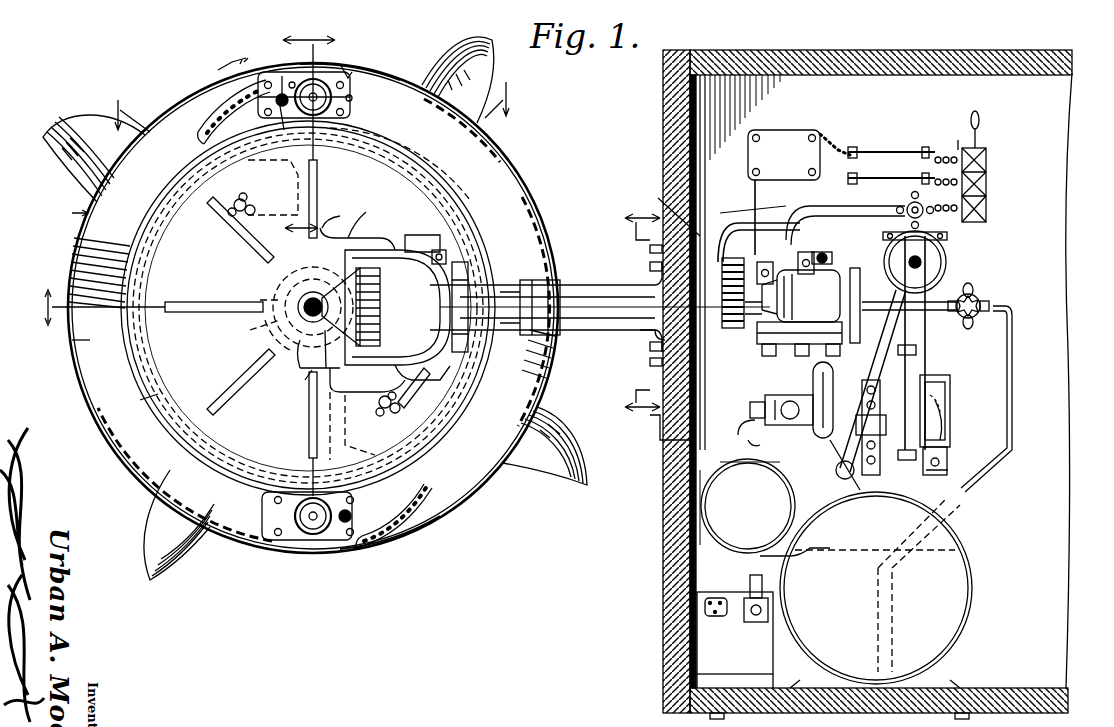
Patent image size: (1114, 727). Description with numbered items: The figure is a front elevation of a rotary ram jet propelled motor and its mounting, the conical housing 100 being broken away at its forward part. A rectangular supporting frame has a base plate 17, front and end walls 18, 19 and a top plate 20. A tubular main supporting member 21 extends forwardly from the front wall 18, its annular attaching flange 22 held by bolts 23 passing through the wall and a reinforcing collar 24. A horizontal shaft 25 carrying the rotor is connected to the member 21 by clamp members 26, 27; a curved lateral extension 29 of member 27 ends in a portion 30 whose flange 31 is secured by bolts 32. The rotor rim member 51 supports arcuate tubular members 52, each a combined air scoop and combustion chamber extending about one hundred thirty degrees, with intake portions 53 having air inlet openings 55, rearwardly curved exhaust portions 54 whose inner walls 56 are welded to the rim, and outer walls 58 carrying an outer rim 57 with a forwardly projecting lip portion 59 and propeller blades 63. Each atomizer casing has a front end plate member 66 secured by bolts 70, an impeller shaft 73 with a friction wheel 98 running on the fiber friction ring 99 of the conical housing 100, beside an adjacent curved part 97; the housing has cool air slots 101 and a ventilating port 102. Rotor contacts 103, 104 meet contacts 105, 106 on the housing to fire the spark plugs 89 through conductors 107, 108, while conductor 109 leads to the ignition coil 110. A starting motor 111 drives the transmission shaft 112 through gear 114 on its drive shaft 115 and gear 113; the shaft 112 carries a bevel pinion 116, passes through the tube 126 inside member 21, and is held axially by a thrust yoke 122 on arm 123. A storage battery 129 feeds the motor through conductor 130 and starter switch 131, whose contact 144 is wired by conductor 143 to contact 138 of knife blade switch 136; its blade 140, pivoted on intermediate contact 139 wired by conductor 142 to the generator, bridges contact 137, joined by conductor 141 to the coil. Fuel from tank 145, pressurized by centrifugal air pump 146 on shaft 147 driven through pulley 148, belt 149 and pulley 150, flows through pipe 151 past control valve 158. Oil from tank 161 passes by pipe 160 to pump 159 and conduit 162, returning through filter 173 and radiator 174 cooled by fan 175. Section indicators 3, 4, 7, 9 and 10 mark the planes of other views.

The section line 3 is at (383, 258).
The section line 4 is at (310, 107).
The section line 7 is at (309, 134).
The section line 9 is at (642, 319).
The upper bearing bracket 10 is at (342, 66).
The base plate 17 is at (1060, 700).
The front wall 18 is at (663, 522).
The end wall 19 is at (1068, 120).
The top plate 20 is at (1072, 60).
The main supporting member 21 is at (640, 333).
The annular attaching flange 22 is at (650, 250).
The bolts 23 is at (650, 267).
The reinforcing collar 24 is at (650, 362).
The horizontal shaft 25 is at (288, 292).
The clamp member 26 is at (280, 278).
The clamp member 27 is at (296, 345).
The curved lateral extension 29 is at (366, 250).
The portion 30 is at (410, 244).
The flange 31 is at (439, 250).
The bolts 32 is at (470, 275).
The rim member 51 is at (425, 384).
The tubular members 52 is at (185, 118).
The intake portions 53 is at (462, 140).
The exhaust portions 54 is at (78, 255).
The air inlet opening 55 is at (450, 160).
The inner walls 56 is at (313, 308).
The outer rim 57 is at (68, 213).
The outer walls 58 is at (288, 308).
The lip portion 59 is at (82, 343).
The propeller blades 63 is at (38, 165).
The front end plate member 66 is at (372, 76).
The bolts 70 is at (300, 540).
The impeller shaft 73 is at (318, 140).
The spark plugs 89 is at (280, 70).
The curved plates 97 is at (206, 96).
The friction wheel 98 is at (340, 118).
The friction ring 99 is at (414, 168).
The conical housing 100 is at (158, 404).
The slots 101 is at (190, 312).
The ventilating port 102 is at (300, 316).
The electrical contact member 103 is at (252, 208).
The electrical contact member 104 is at (367, 386).
The contact member 105 is at (225, 228).
The contact member 106 is at (400, 394).
The electrical conductor 107 is at (273, 187).
The electrical conductor 108 is at (354, 426).
The conductor 109 is at (770, 208).
The ignition coil 110 is at (785, 145).
The starting motor 111 is at (840, 262).
The transmission shaft 112 is at (512, 275).
The gear 113 is at (664, 204).
The gear 114 is at (665, 300).
The drive shaft 115 is at (782, 298).
The bevel pinion 116 is at (359, 307).
The thrust yoke 122 is at (781, 262).
The arm 123 is at (656, 418).
The tube 126 is at (522, 295).
The storage battery 129 is at (700, 640).
The electric conductor 130 is at (946, 262).
The starter switch 131 is at (908, 206).
The knife blade switch 136 is at (986, 180).
The end contact 137 is at (990, 150).
The end contact 138 is at (986, 212).
The intermediate contact 139 is at (986, 195).
The switch blade 140 is at (986, 165).
The conductor 141 is at (950, 160).
The conductor wire 142 is at (960, 128).
The conductor wire 143 is at (925, 160).
The contact 144 is at (962, 216).
The fuel tank 145 is at (970, 586).
The centrifugal air pump 146 is at (813, 390).
The shaft 147 is at (852, 474).
The drive pulley 148 is at (905, 356).
The belt 149 is at (902, 336).
The pulley 150 is at (840, 280).
The pipe 151 is at (303, 368).
The control valve 158 is at (978, 298).
The centrifugal pump 159 is at (750, 408).
The pipe 160 is at (735, 433).
The oil tank 161 is at (690, 498).
The conduit 162 is at (340, 382).
The oil filter 173 is at (900, 214).
The cooling radiator 174 is at (935, 400).
The fan 175 is at (942, 380).